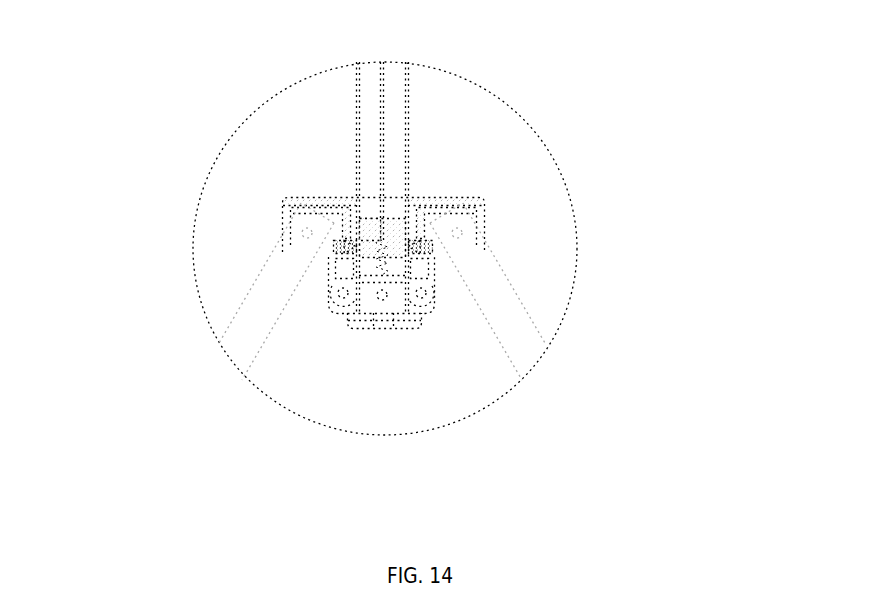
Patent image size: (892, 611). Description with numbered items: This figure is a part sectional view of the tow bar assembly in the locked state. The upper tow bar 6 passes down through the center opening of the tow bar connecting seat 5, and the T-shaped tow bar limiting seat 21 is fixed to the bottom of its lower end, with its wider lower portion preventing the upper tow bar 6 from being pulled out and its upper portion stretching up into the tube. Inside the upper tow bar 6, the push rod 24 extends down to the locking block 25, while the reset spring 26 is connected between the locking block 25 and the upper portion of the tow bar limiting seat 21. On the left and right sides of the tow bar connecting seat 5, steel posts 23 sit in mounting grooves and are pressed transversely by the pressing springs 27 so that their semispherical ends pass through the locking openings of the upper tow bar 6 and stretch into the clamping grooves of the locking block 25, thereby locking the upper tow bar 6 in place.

The tow bar connecting seat 5 is at (475, 205).
The upper tow bar 6 is at (398, 136).
The tow bar limiting seat 21 is at (393, 323).
The steel posts 23 is at (408, 250).
The push rod 24 is at (383, 82).
The locking block 25 is at (295, 197).
The reset spring 26 is at (425, 292).
The pressing springs 27 is at (345, 245).